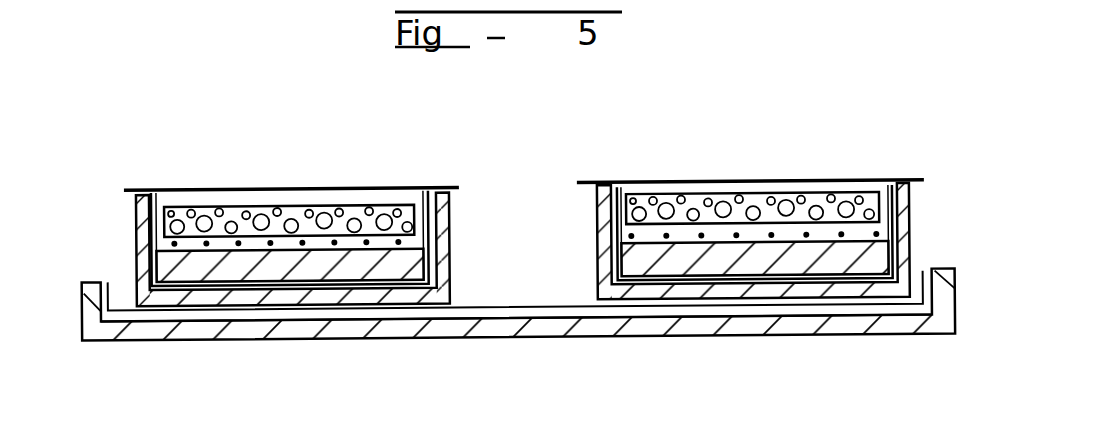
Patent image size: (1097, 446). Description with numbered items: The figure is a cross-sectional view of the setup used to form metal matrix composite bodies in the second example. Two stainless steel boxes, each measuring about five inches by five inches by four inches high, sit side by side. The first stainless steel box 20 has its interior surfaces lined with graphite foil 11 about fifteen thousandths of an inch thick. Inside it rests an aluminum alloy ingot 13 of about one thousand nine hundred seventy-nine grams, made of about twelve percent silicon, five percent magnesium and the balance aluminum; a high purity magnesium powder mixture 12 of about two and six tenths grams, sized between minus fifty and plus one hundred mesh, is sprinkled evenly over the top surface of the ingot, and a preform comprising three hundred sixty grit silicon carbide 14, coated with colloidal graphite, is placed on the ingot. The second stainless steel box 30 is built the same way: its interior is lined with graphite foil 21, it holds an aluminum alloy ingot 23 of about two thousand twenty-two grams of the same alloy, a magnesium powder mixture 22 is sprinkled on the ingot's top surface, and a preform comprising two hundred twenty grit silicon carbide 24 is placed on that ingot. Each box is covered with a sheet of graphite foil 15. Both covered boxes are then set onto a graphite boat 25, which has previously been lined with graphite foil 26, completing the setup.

The graphite foil 11 is at (163, 190).
The magnesium powder mixture 12 is at (172, 250).
The aluminum alloy ingot 13 is at (410, 267).
The preform comprising 360 grit silicon carbide 14 is at (334, 222).
The graphite foil sheet 15 is at (210, 187).
The first stainless steel box 20 is at (142, 222).
The graphite foil 21 is at (885, 185).
The magnesium powder mixture 22 is at (601, 232).
The aluminum alloy ingot 23 is at (628, 260).
The preform comprising 220 grit silicon carbide 24 is at (670, 156).
The graphite boat 25 is at (522, 343).
The graphite foil 26 is at (922, 272).
The second stainless steel box 30 is at (913, 200).